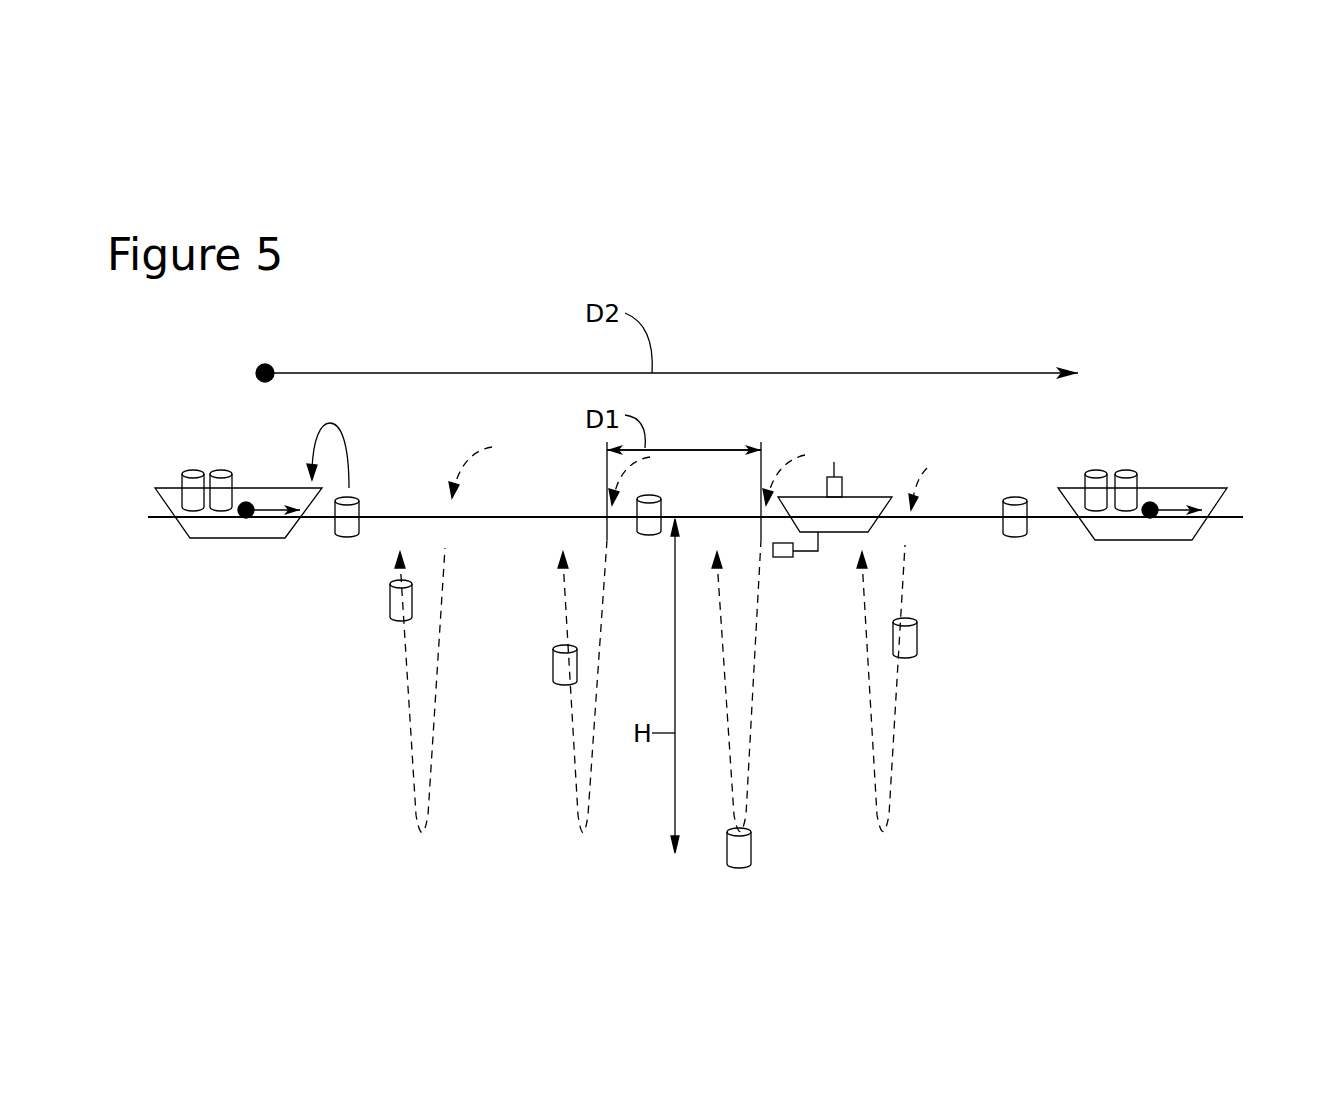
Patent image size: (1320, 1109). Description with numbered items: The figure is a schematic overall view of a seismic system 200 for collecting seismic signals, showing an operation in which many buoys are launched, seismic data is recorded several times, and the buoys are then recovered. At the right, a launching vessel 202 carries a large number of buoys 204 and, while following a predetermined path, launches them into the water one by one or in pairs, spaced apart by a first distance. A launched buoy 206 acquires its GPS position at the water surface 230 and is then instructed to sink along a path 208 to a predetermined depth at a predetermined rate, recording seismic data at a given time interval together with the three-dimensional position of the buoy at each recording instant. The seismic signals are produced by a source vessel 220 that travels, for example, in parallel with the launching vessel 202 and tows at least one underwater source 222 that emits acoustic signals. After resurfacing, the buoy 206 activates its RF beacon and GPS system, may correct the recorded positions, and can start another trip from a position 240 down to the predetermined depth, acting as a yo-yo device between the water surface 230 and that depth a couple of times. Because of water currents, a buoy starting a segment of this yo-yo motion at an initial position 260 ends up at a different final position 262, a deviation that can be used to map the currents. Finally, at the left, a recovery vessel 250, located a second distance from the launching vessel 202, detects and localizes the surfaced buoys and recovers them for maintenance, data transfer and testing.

The seismic system 200 is at (856, 329).
The launching vessel 202 is at (1177, 487).
The buoys 204 is at (1095, 468).
The launched buoy 206 is at (660, 500).
The path 208 is at (900, 760).
The source vessel 220 is at (840, 490).
The source 222 is at (783, 557).
The water surface 230 is at (1225, 516).
The position 240 is at (652, 490).
The recovery vessel 250 is at (255, 488).
The initial position 260 is at (447, 547).
The final position 262 is at (398, 563).